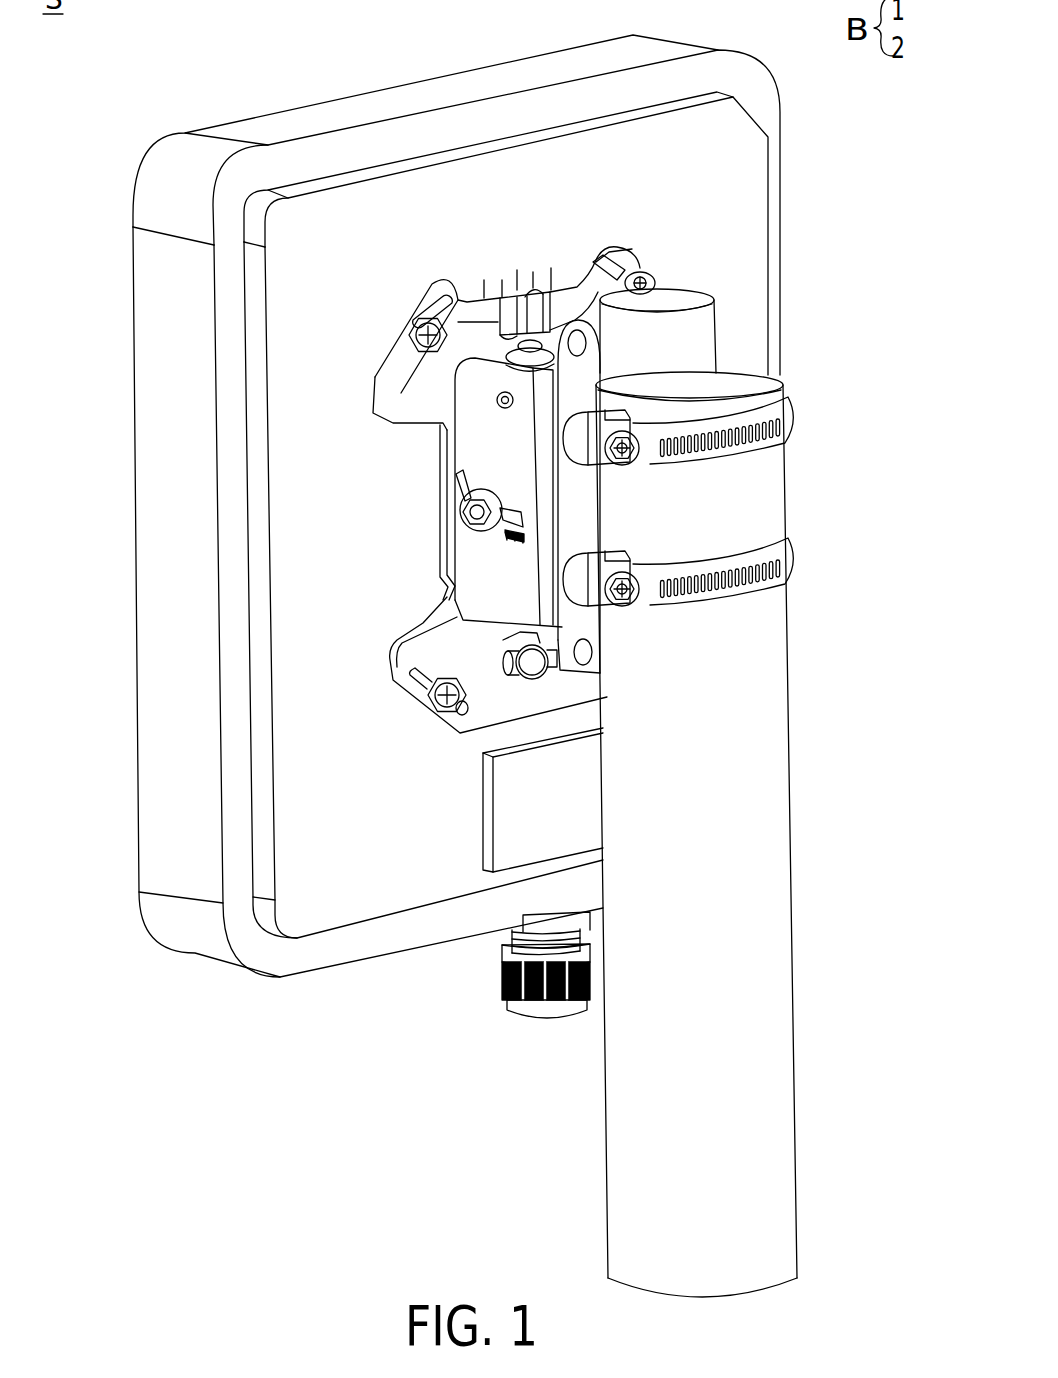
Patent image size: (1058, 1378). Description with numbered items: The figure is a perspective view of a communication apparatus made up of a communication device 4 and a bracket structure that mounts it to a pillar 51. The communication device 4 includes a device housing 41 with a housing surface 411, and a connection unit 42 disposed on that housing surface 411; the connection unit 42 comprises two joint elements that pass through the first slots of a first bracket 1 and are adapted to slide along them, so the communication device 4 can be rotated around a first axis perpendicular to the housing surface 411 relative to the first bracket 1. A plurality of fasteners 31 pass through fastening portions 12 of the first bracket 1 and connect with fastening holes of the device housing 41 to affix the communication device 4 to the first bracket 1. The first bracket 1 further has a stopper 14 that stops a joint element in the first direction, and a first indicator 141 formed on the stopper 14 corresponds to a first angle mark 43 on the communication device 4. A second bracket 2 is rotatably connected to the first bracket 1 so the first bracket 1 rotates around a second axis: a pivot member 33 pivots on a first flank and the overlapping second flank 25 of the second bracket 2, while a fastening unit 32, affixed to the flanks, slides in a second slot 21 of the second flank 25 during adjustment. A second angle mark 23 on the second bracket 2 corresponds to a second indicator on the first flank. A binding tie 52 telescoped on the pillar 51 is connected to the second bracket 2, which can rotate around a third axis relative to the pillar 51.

The first bracket 1 is at (567, 712).
The fastening portion 12 is at (605, 270).
The stopper 14 is at (440, 348).
The first indicator 141 is at (527, 290).
The second bracket 2 is at (453, 388).
The second slot 21 is at (465, 505).
The second angle mark 23 is at (443, 580).
The second flank 25 is at (393, 655).
The fastener 31 is at (642, 270).
The fastening unit 32 is at (462, 509).
The pivot member 33 is at (495, 400).
The communication device 4 is at (200, 958).
The device housing 41 is at (163, 712).
The housing surface 411 is at (345, 862).
The connection unit 42 is at (520, 746).
The first angle mark 43 is at (500, 296).
The pillar 51 is at (790, 1012).
The binding tie 52 is at (795, 440).